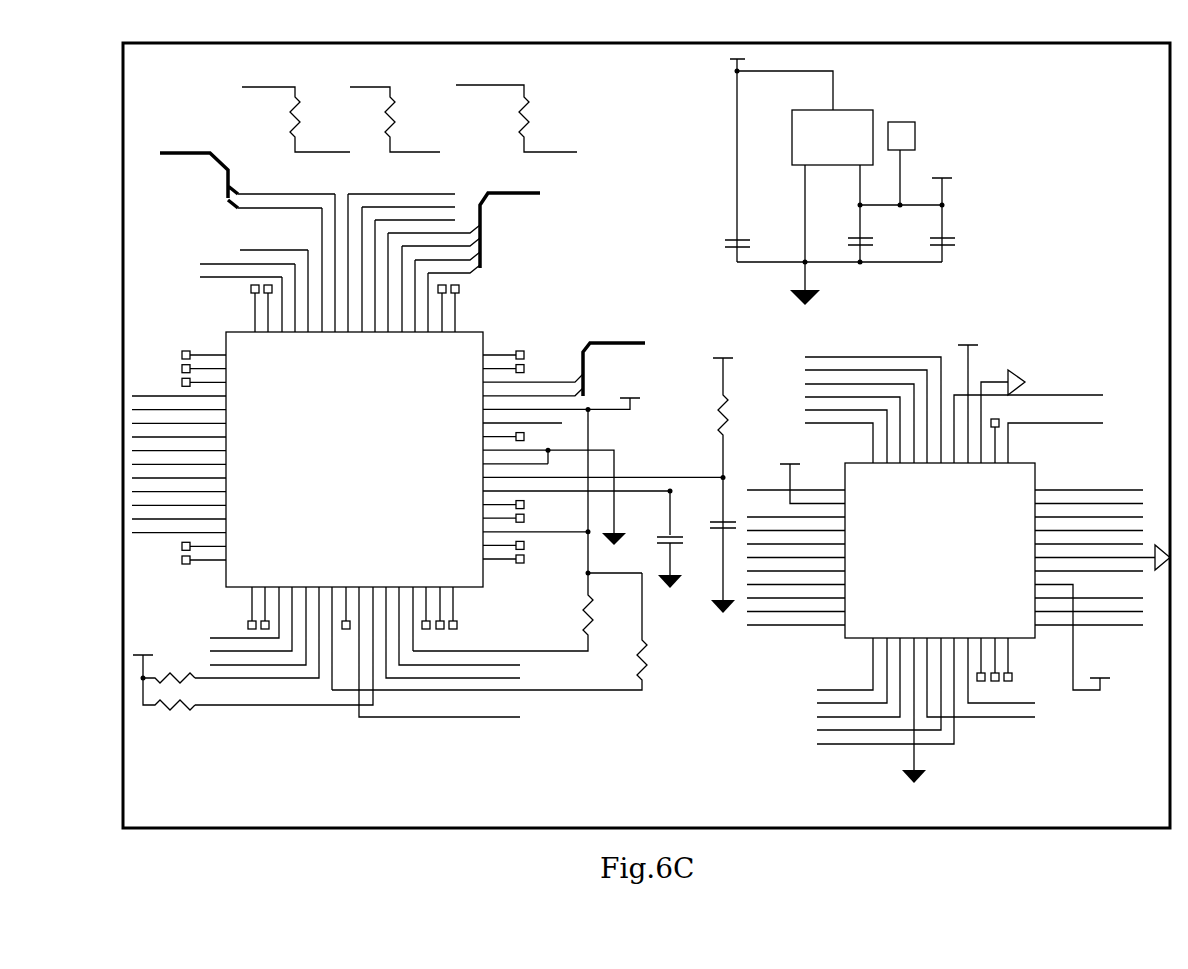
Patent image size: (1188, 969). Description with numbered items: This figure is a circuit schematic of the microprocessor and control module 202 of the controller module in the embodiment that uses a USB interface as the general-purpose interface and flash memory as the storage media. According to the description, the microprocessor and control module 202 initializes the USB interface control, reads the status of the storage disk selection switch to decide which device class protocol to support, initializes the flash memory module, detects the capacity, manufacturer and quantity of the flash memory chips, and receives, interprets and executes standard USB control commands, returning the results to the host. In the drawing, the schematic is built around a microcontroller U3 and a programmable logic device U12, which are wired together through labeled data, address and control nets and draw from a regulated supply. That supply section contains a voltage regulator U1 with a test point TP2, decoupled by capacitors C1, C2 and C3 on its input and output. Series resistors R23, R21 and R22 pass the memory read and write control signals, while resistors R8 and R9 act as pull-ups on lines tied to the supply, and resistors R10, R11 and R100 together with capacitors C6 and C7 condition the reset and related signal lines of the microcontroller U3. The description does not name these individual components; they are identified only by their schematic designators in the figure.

The microprocessor and control module 202 is at (646, 435).
The microcontroller H8/3664FP U3 is at (353, 411).
The CPLD XC9536-10-VQ44 U12 is at (978, 550).
The voltage regulator XC62FP3302 U1 is at (789, 152).
The test point TP2 is at (913, 154).
The resistor R23 is at (296, 112).
The resistor R21 is at (395, 112).
The resistor R22 is at (516, 111).
The resistor R8 is at (168, 661).
The resistor R9 is at (171, 701).
The resistor R10 is at (515, 612).
The resistor R11 is at (727, 431).
The resistor R100 is at (505, 631).
The capacitor C1 is at (752, 166).
The capacitor C2 is at (868, 233).
The capacitor C3 is at (955, 236).
The capacitor C6 is at (583, 539).
The capacitor C7 is at (713, 566).